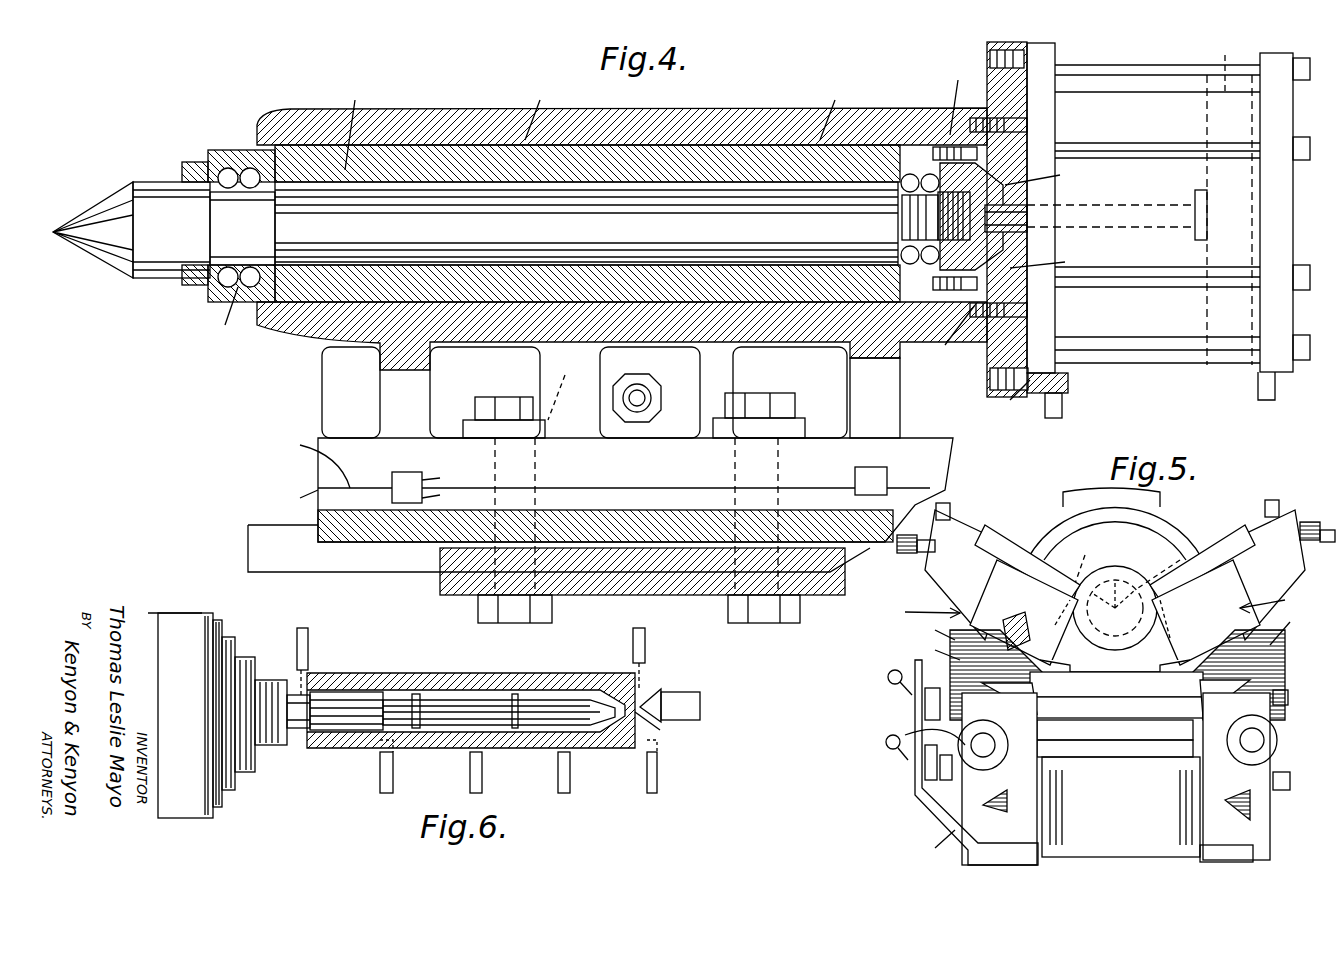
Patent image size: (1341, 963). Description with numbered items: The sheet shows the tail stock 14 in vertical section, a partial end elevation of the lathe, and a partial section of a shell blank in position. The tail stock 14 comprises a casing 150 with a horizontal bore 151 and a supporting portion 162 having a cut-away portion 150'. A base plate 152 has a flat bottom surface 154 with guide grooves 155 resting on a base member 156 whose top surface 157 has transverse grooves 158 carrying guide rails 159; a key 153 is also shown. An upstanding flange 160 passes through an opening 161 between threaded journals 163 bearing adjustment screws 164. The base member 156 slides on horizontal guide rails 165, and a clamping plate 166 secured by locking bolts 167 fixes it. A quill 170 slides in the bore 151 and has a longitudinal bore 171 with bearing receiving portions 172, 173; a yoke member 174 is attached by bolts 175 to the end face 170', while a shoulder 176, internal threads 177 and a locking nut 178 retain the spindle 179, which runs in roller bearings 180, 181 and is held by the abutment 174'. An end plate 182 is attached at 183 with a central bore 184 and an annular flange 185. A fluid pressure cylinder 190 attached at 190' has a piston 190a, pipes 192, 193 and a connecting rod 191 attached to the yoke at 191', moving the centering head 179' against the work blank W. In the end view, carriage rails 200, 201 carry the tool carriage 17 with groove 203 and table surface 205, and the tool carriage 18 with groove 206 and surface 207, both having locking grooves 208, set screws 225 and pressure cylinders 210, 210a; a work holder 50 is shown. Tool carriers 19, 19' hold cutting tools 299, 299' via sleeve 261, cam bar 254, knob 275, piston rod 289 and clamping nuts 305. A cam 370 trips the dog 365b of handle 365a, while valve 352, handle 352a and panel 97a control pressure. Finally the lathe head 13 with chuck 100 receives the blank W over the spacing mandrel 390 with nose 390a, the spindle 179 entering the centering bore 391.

In FIG. 4, the tail stock 14 is at (425, 112).
In FIG. 4, the casing 150 is at (581, 229).
In FIG. 4, the cut-away portion 150' is at (790, 392).
In FIG. 4, the horizontal bore 151 is at (836, 111).
In FIG. 4, the base plate 152 is at (318, 468).
In FIG. 5, the base plate 152 is at (1030, 672).
In FIG. 4, the key block 153 is at (400, 472).
In FIG. 4, the flat bottom surface 154 is at (308, 462).
In FIG. 4, the guide grooves 155 is at (890, 470).
In FIG. 4, the base member 156 is at (380, 530).
In FIG. 5, the base member 156 is at (1105, 745).
In FIG. 4, the top surface 157 is at (292, 497).
In FIG. 4, the transverse grooves 158 is at (855, 490).
In FIG. 4, the guide rails 159 is at (860, 470).
In FIG. 4, the upstanding flange 160 is at (700, 385).
In FIG. 5, the upstanding flange 160 is at (1120, 684).
In FIG. 4, the opening 161 is at (563, 388).
In FIG. 4, the supporting portion 162 is at (900, 395).
In FIG. 4, the threaded journals 163 is at (660, 380).
In FIG. 5, the threaded journals 163 is at (1122, 622).
In FIG. 4, the adjustment screw 164 is at (630, 385).
In FIG. 4, the horizontal guide rails 165 is at (320, 565).
In FIG. 5, the horizontal guide rails 165 is at (1050, 742).
In FIG. 4, the clamping plate 166 is at (650, 590).
In FIG. 5, the clamping plate 166 is at (1128, 775).
In FIG. 4, the locking bolts 167 is at (520, 395).
In FIG. 5, the locking bolts 167 is at (1150, 700).
In FIG. 4, the tail stock quill 170 is at (543, 111).
In FIG. 4, the end face 170' is at (962, 99).
In FIG. 4, the longitudinal bore 171 is at (356, 126).
In FIG. 4, the bearing receiving portion 172 is at (221, 316).
In FIG. 4, the bearing receiving portion 173 is at (918, 140).
In FIG. 4, the yoke member 174 is at (1051, 174).
In FIG. 4, the abutment 174' is at (984, 273).
In FIG. 4, the bolts 175 is at (1000, 165).
In FIG. 4, the shoulder 176 is at (225, 160).
In FIG. 4, the internal threads 177 is at (210, 165).
In FIG. 4, the locking nut 178 is at (182, 168).
In FIG. 4, the rotatable center piece or spindle 179 is at (170, 255).
In FIG. 6, the rotatable center piece or spindle 179 is at (698, 692).
In FIG. 4, the centering head 179' is at (86, 230).
In FIG. 6, the centering head 179' is at (666, 685).
In FIG. 4, the roller bearing 180 is at (242, 228).
In FIG. 4, the roller bearing 181 is at (885, 200).
In FIG. 4, the end plate 182 is at (1010, 50).
In FIG. 4, the attachment point 183 is at (1010, 105).
In FIG. 4, the central bore 184 is at (1057, 260).
In FIG. 4, the annular flange 185 is at (948, 334).
In FIG. 4, the double acting fluid pressure cylinder 190 is at (1168, 221).
In FIG. 4, the piston 190a is at (1225, 65).
In FIG. 4, the cylinder attachment 190' is at (1010, 401).
In FIG. 4, the connecting rod 191 is at (1117, 207).
In FIG. 4, the rod attachment 191' is at (1047, 207).
In FIG. 4, the pipe 192 is at (1062, 405).
In FIG. 4, the pipe 193 is at (1258, 388).
In FIG. 5, the workpiece holder arc 50 is at (1172, 518).
In FIG. 5, the work blank W is at (1158, 603).
In FIG. 6, the work blank W is at (415, 690).
In FIG. 5, the cutting tool 299 is at (1093, 568).
In FIG. 6, the cutting tool 299 is at (544, 766).
In FIG. 5, the cutting tool 299' is at (1185, 575).
In FIG. 6, the cutting tool 299' is at (474, 658).
In FIG. 5, the tubular bracket arm or sleeve 261 is at (950, 575).
In FIG. 5, the clamping nuts 305 is at (1010, 525).
In FIG. 5, the piston rod 289 is at (1000, 520).
In FIG. 5, the manipulating knob 275 is at (907, 555).
In FIG. 5, the cam or profile bar 254 is at (1018, 590).
In FIG. 5, the tool carriers 19 is at (922, 607).
In FIG. 5, the tool carriers 19' is at (1276, 600).
In FIG. 5, the upper table surface 207 is at (1292, 624).
In FIG. 5, the locking grooves 208 is at (925, 629).
In FIG. 5, the inclined upper table surface 205 is at (927, 649).
In FIG. 5, the tool carriage 18 is at (1282, 660).
In FIG. 5, the groove 203 is at (1009, 699).
In FIG. 5, the groove 206 is at (1225, 699).
In FIG. 5, the carriage rail 200 is at (1000, 775).
In FIG. 5, the carriage rail 201 is at (1245, 800).
In FIG. 5, the double acting pressure cylinder 210 is at (1010, 760).
In FIG. 5, the pressure cylinder 210a is at (1265, 740).
In FIG. 5, the set screws or bolts 225 is at (1285, 692).
In FIG. 5, the tool carriage 17 is at (960, 800).
In FIG. 5, the panel 97a is at (930, 845).
In FIG. 5, the manipulating handle 352a is at (877, 687).
In FIG. 5, the five-way valve 352 is at (925, 710).
In FIG. 5, the cam 370 is at (906, 734).
In FIG. 5, the operating handle 365a is at (875, 750).
In FIG. 5, the dog or nose 365b is at (940, 770).
In FIG. 6, the lathe head 13 is at (193, 630).
In FIG. 6, the expandible chuck 100 is at (335, 695).
In FIG. 6, the spacing mandrel 390 is at (490, 706).
In FIG. 6, the blunt forward nose 390a is at (612, 700).
In FIG. 6, the centering bore 391 is at (660, 728).